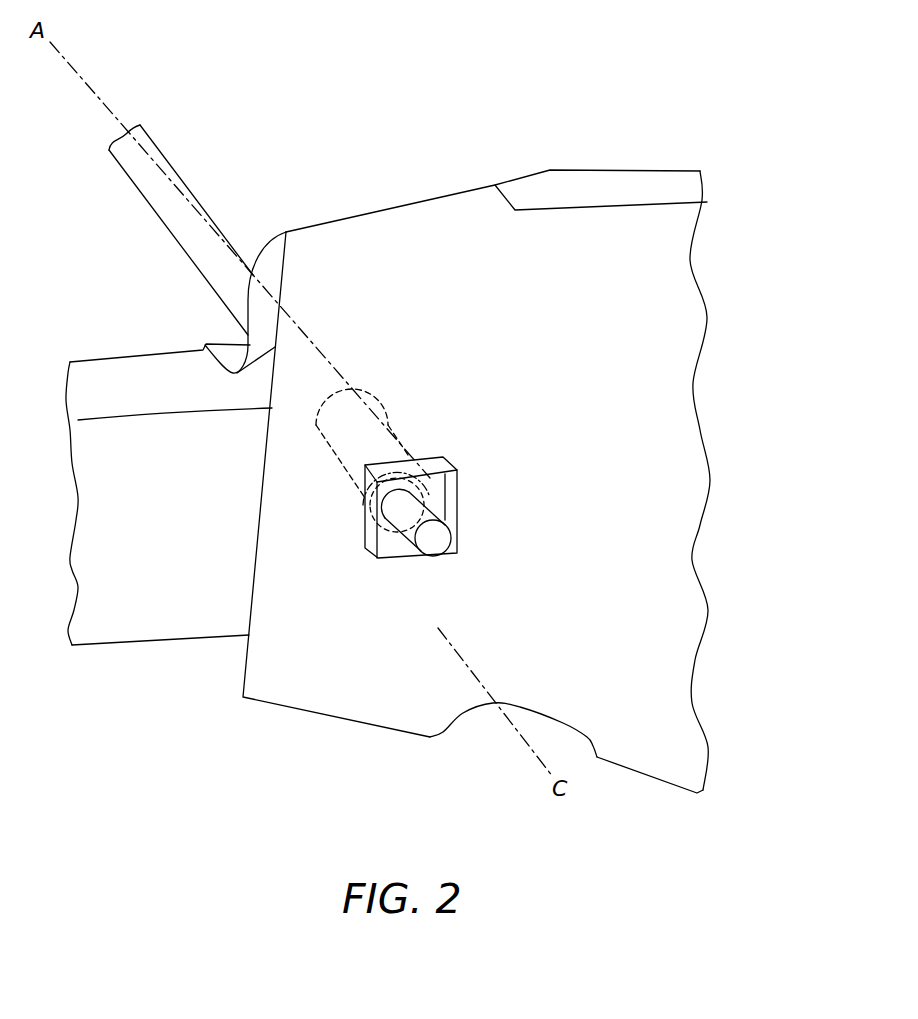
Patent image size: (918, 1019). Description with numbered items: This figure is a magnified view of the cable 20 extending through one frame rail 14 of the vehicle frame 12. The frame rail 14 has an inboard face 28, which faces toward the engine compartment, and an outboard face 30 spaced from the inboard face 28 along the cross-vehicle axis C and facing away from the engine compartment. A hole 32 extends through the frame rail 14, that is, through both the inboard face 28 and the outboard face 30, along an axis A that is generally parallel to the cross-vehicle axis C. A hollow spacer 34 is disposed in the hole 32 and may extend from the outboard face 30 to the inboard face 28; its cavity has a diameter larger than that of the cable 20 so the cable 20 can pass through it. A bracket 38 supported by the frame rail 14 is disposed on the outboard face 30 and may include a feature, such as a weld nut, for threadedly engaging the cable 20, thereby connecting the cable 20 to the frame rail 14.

The frame 12 is at (356, 187).
The frame rail 14 is at (120, 354).
The cable 20 is at (203, 205).
The inboard face 28 is at (167, 347).
The outboard face 30 is at (178, 524).
The hole 32 is at (393, 518).
The spacer 34 is at (388, 423).
The bracket 38 is at (458, 490).